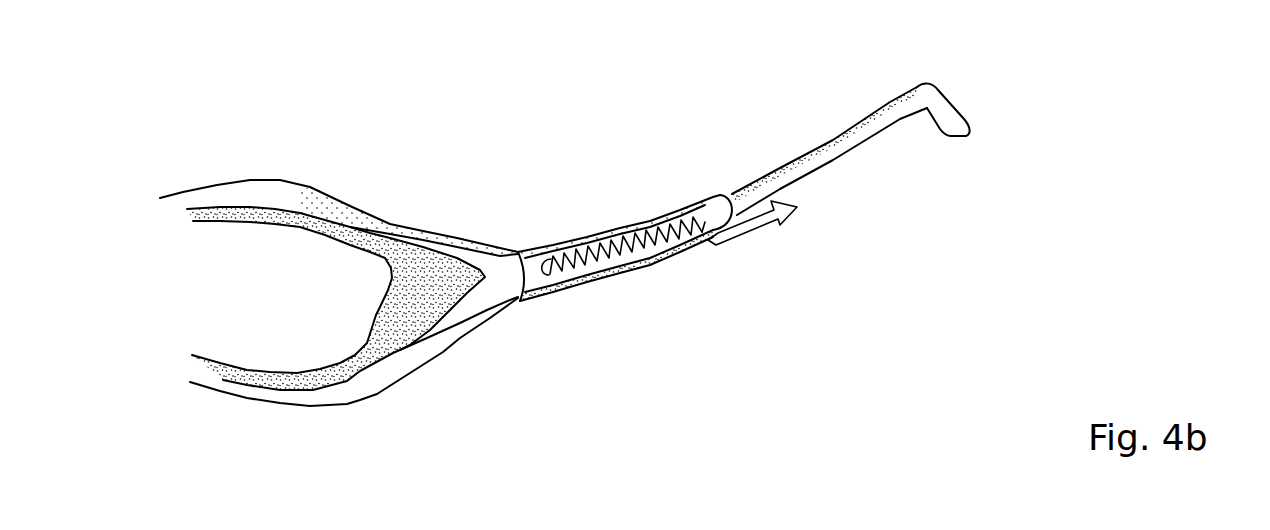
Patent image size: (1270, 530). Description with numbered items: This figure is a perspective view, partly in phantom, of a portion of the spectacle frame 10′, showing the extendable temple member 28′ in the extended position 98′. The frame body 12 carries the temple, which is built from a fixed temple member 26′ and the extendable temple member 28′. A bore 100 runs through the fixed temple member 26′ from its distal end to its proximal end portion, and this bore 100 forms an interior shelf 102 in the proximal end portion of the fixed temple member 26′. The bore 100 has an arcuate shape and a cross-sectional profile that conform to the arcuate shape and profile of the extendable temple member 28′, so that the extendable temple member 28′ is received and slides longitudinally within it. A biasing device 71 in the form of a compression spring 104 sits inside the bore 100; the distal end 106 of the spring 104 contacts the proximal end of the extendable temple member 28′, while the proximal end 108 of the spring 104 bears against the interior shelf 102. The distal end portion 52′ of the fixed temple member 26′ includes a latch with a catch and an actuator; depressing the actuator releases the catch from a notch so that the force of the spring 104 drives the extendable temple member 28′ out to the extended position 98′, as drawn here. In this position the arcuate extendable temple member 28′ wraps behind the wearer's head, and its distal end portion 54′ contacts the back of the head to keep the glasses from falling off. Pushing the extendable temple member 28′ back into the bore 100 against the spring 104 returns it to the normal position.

The spectacle frame 10′ is at (1108, 80).
The frame body 12 is at (421, 233).
The fixed temple member 26′ is at (572, 287).
The extendable temple member 28′ is at (905, 120).
The distal end portion 52′ is at (717, 246).
The distal end portion 54′ is at (1010, 33).
The biasing device 71 is at (657, 250).
The extended position 98′ is at (568, 38).
The bore 100 is at (607, 240).
The interior shelf 102 is at (542, 266).
The compression spring 104 is at (643, 240).
The distal end 106 is at (697, 205).
The proximal end 108 is at (533, 293).